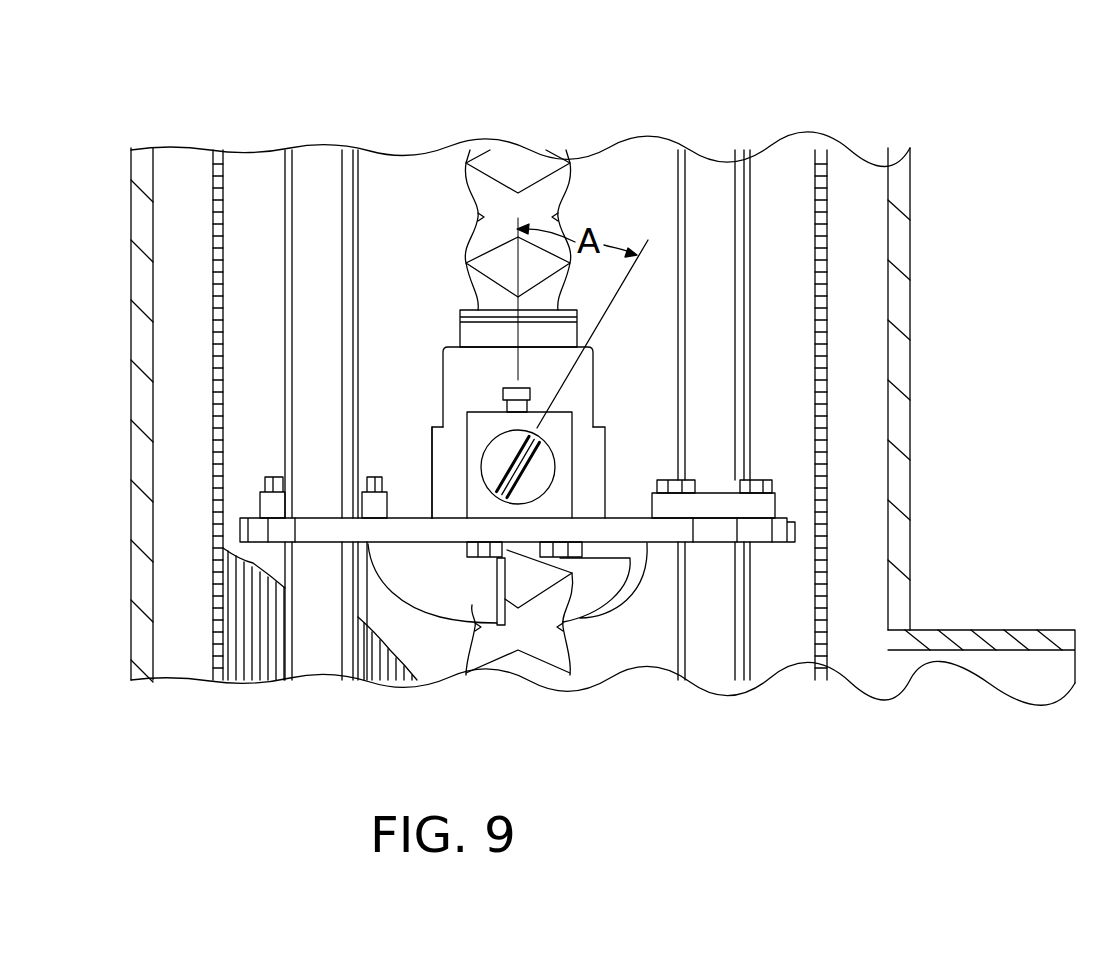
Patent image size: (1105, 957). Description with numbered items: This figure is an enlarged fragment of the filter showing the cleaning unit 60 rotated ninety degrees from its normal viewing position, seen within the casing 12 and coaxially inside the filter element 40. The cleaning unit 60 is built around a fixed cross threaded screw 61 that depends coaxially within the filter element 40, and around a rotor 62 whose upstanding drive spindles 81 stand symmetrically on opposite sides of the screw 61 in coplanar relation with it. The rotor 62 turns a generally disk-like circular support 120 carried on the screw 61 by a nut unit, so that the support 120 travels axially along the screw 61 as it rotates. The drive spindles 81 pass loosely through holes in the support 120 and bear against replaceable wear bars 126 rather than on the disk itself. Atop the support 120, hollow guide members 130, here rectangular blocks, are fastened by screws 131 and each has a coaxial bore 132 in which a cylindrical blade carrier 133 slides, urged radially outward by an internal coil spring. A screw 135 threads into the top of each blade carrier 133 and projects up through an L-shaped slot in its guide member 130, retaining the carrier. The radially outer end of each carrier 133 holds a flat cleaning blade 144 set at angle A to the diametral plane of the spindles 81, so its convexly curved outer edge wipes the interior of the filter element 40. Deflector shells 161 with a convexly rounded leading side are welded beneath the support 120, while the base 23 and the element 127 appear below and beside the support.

The casing 12 is at (915, 166).
The base 23 is at (1007, 630).
The filter element 40 is at (822, 270).
The cleaning unit 60 is at (541, 205).
The cross threaded screw 61 is at (514, 143).
The rotor 62 is at (697, 153).
The drive spindles 81 is at (312, 150).
The support 120 is at (797, 537).
The wear bars 126 is at (773, 508).
The fastener nuts 127 is at (777, 489).
The hollow guide members 130 is at (465, 414).
The screws 131 is at (462, 553).
The bores 132 is at (547, 458).
The blade carriers 133 is at (543, 483).
The screw 135 is at (510, 388).
The cleaning blade 144 is at (513, 458).
The deflector shells 161 is at (515, 667).